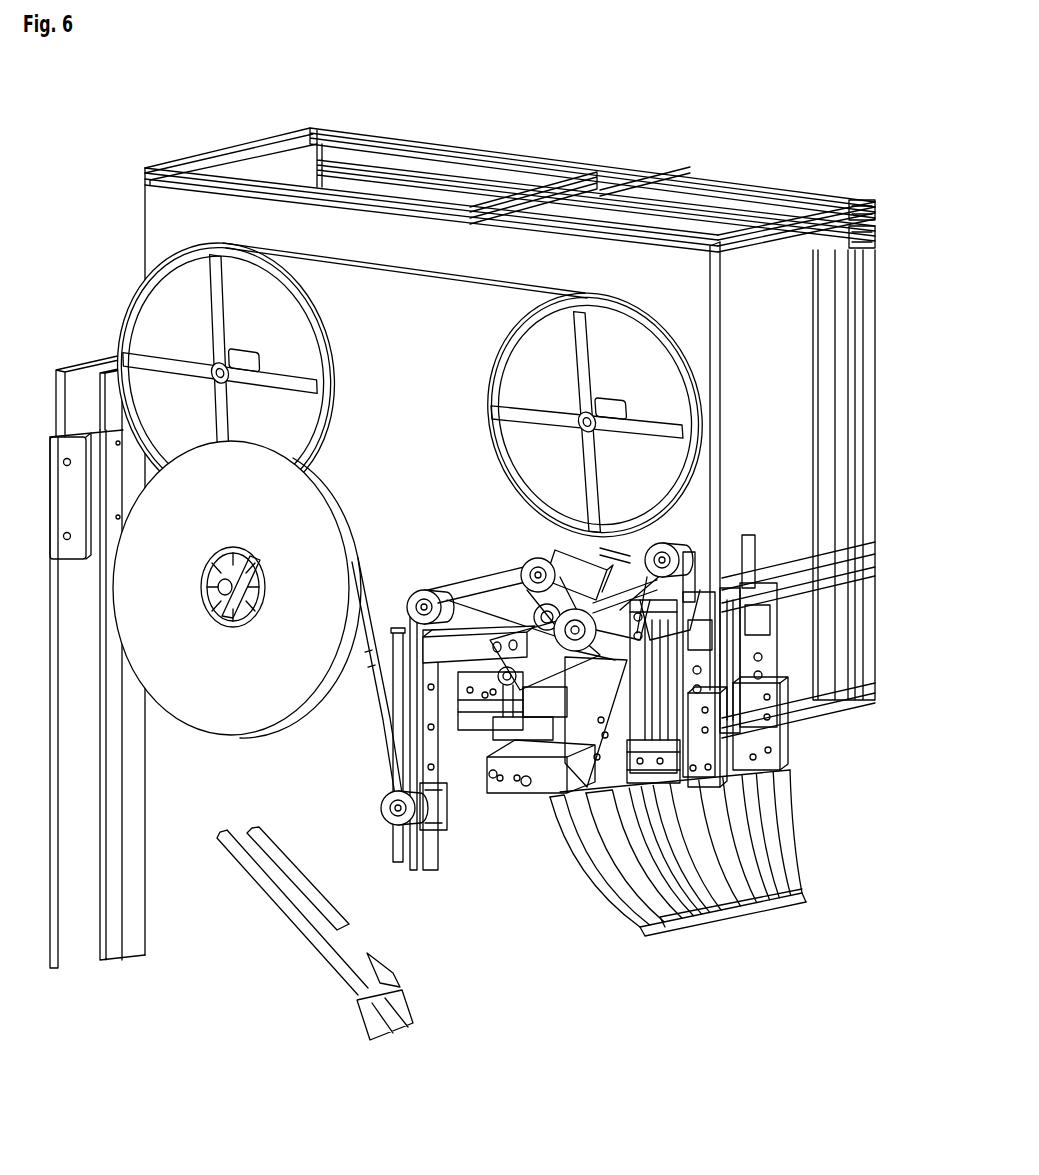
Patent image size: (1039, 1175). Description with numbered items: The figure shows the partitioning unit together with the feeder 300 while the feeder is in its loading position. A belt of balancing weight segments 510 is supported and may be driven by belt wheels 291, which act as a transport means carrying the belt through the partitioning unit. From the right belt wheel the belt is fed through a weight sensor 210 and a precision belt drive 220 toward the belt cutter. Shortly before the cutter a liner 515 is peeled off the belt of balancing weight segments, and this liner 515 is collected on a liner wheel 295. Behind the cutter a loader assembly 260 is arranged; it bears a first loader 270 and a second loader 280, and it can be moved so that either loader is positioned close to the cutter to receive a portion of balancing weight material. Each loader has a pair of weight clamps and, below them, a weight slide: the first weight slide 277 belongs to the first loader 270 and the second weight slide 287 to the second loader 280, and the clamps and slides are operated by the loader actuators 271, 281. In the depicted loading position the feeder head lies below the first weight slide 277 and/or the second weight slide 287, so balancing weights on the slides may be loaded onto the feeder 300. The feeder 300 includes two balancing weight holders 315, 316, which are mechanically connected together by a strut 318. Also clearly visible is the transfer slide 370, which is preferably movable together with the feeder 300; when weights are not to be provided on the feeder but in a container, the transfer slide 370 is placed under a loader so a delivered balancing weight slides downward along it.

The belt of balancing weight segments 510 is at (422, 272).
The belt wheels 291 is at (490, 405).
The weight sensor 210 is at (546, 544).
The precision belt drive 220 is at (494, 594).
The liner wheel 295 is at (210, 693).
The liner 515 is at (383, 724).
The loader assembly 260 is at (519, 798).
The first loader 270 is at (722, 768).
The second loader 280 is at (770, 739).
The loader actuator 271 is at (698, 613).
The loader actuator 281 is at (767, 596).
The first weight slide 277 is at (677, 866).
The second weight slide 287 is at (756, 858).
The balancing weight holder 315 is at (658, 940).
The balancing weight holder 316 is at (795, 897).
The strut 318 is at (738, 908).
The feeder 300 is at (729, 936).
The transfer slide 370 is at (277, 880).